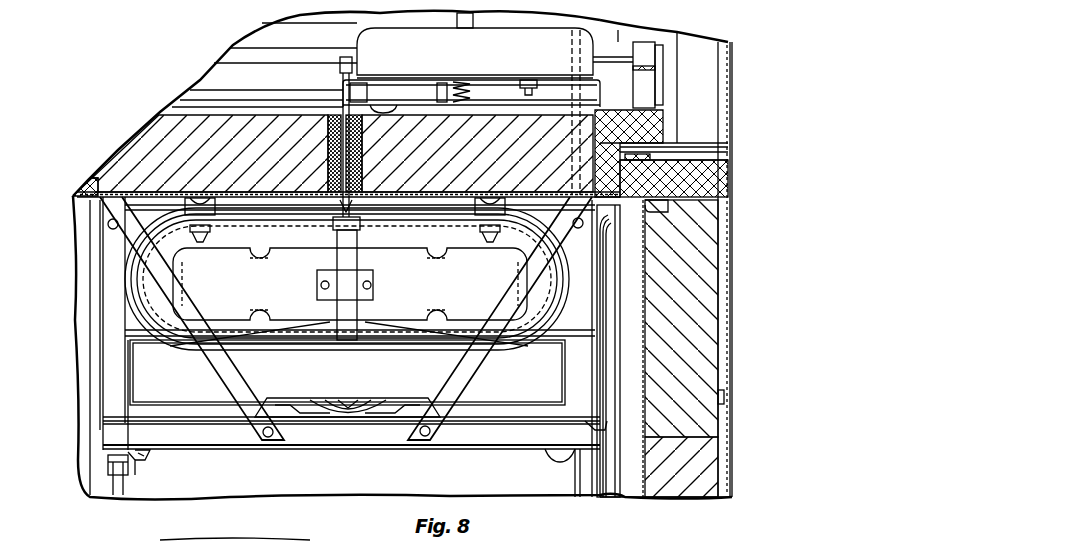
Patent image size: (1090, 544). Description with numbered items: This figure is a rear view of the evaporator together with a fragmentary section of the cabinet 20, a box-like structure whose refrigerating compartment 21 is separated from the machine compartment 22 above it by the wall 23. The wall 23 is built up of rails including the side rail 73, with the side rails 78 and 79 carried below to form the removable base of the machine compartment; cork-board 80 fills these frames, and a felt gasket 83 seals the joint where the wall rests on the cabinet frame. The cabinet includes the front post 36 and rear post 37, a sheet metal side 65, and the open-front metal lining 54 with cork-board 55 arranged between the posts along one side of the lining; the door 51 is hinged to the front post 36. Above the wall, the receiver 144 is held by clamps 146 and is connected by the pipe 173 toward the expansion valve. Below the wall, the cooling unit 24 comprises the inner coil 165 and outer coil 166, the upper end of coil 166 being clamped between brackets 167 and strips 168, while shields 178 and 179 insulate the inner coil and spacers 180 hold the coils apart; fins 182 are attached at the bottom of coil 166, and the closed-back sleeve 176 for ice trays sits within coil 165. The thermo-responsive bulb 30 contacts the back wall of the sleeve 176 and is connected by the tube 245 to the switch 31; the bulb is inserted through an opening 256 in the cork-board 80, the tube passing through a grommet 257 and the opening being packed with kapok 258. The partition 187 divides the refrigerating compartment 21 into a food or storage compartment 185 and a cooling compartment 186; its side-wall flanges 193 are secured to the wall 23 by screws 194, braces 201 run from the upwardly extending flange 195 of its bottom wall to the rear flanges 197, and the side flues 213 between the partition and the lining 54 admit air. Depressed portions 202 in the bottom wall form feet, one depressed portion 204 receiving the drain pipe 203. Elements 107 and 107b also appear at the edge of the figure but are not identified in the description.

The receiver 144 is at (218, 72).
The kapok 258 is at (333, 143).
The opening 256 is at (333, 143).
The tube 245 is at (380, 100).
The switch 31 is at (529, 64).
The pipe 173 is at (575, 25).
The machine compartment 22 is at (667, 43).
The clamps 146 is at (643, 80).
The side rail 73 is at (653, 125).
The rear post 37 is at (718, 112).
The cork-board 80 is at (143, 150).
The side rail 79 is at (90, 178).
The wall 23 is at (700, 143).
The felt gasket 83 is at (650, 158).
The side rail 78 is at (610, 182).
The outwardly extending flanges 193 is at (93, 196).
The screws 194 is at (97, 222).
The strips 168 is at (193, 237).
The spacers 180 is at (207, 240).
The outer coil 166 is at (293, 223).
The grommet 257 is at (372, 200).
The shield 178 is at (427, 240).
The brackets 167 is at (485, 210).
The inner coil 165 is at (347, 279).
The thermo-responsive bulb 30 is at (379, 179).
The cooling unit 24 is at (464, 309).
The shield 179 is at (458, 328).
The partition 187 is at (100, 353).
The cooling compartment 186 is at (127, 367).
The rear flanges 197 is at (110, 390).
The side flues 213 is at (88, 410).
The braces 201 is at (233, 380).
The closed-back sleeve 176 is at (308, 310).
The cork-board 55 is at (700, 308).
The cabinet 20 is at (770, 354).
The sheet metal side 65 is at (733, 415).
The drain pipe 203 is at (118, 480).
The depressed portion 204 is at (140, 455).
The depressed portions 202 is at (135, 465).
The refrigerating compartment 21 is at (300, 482).
The fins 182 is at (495, 395).
The upwardly extending flanges 195 is at (535, 430).
The door 51 is at (607, 423).
The food or storage compartment 185 is at (383, 473).
The metal lining 54 is at (650, 465).
The lower member 107 is at (235, 528).
The lower member part 107b is at (305, 528).
The front post 36 is at (57, 535).